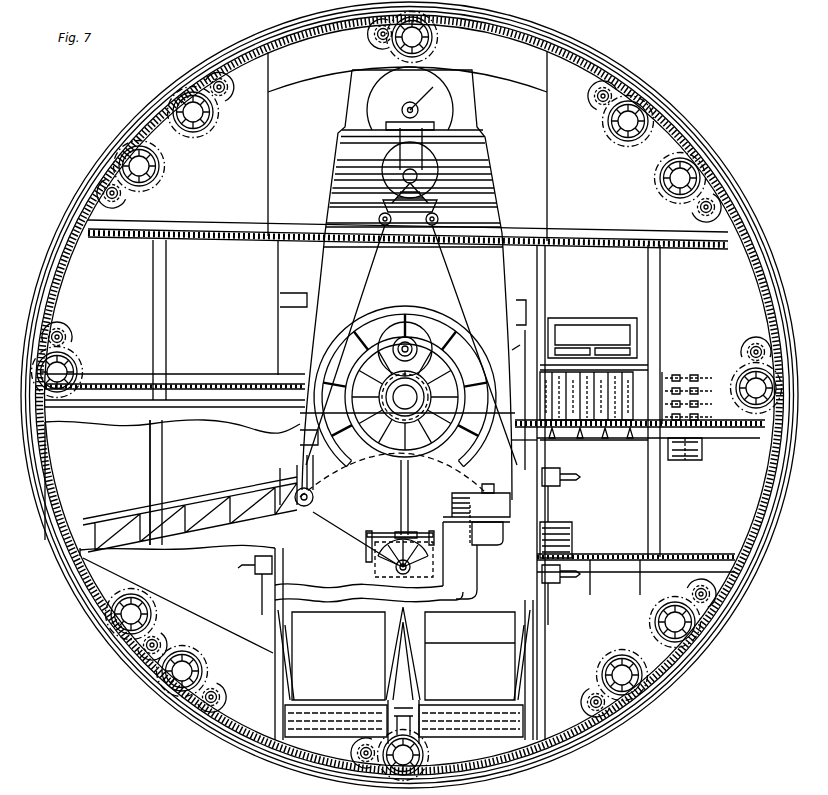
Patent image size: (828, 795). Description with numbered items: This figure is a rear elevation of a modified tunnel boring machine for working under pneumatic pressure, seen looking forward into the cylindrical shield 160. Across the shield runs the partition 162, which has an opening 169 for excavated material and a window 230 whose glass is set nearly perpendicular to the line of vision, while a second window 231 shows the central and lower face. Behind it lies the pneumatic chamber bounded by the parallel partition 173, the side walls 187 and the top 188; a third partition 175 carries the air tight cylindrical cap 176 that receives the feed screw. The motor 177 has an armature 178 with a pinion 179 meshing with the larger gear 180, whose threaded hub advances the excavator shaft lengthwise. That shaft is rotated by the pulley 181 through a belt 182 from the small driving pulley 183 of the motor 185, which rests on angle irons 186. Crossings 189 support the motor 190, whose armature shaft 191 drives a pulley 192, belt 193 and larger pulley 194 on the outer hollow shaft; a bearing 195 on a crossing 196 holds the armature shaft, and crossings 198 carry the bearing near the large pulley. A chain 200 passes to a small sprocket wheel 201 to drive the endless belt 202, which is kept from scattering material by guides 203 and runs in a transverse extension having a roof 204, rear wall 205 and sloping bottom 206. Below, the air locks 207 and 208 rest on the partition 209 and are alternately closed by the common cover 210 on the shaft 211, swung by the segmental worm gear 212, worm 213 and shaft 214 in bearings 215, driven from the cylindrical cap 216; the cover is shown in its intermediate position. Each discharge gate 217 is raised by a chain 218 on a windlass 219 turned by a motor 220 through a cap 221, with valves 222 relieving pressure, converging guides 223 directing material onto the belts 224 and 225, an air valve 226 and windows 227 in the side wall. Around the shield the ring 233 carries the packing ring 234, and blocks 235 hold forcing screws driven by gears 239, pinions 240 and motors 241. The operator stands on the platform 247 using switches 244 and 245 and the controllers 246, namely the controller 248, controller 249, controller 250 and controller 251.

The shield 160 is at (670, 108).
The partition 162 is at (405, 403).
The opening 169 is at (77, 481).
The partition 173 is at (411, 158).
The partition 175 is at (524, 446).
The cylindrical cap 176 is at (405, 397).
The motor 177 is at (405, 349).
The armature 178 is at (405, 397).
The pinion 179 is at (418, 340).
The gear 180 is at (405, 397).
The pulley 181 is at (405, 386).
The belt 182 is at (354, 278).
The driving pulley 183 is at (410, 170).
The motor 185 is at (428, 190).
The angle irons 186 is at (429, 212).
The side walls 187 is at (284, 270).
The top 188 is at (474, 78).
The crossings 189 is at (430, 176).
The motor 190 is at (410, 98).
The armature shaft 191 is at (428, 94).
The pulley 192 is at (418, 110).
The belt 193 is at (356, 300).
The pulley 194 is at (512, 352).
The bearing 195 is at (398, 120).
The crossing 196 is at (412, 137).
The crossings 198 is at (305, 437).
The chain 200 is at (323, 472).
The sprocket wheel 201 is at (309, 491).
The endless belt 202 is at (125, 522).
The guides 203 is at (190, 508).
The roof 204 is at (230, 424).
The rear wall 205 is at (230, 552).
The sloping bottom 206 is at (178, 605).
The air lock 207 is at (312, 655).
The air lock 208 is at (493, 655).
The partition 209 is at (369, 593).
The cover 210 is at (401, 478).
The shaft 211 is at (396, 568).
The segmental worm gear 212 is at (432, 562).
The worm 213 is at (412, 534).
The shaft 214 is at (400, 526).
The bearings 215 is at (366, 531).
The cylindrical cap 216 is at (568, 540).
The discharge gates 217 is at (403, 611).
The chain 218 is at (328, 590).
The windlass 219 is at (457, 510).
The motor 220 is at (489, 483).
The cap 221 is at (550, 510).
The valves 222 is at (409, 590).
The converging guides 223 is at (537, 650).
The belt 224 is at (336, 712).
The belt 225 is at (471, 710).
The air valve 226 is at (558, 480).
The windows 227 is at (530, 400).
The window 230 is at (592, 338).
The window 231 is at (638, 380).
The ring 233 is at (136, 124).
The packing ring 234 is at (66, 272).
The blocks 235 is at (406, 396).
The gear 239 is at (436, 46).
The pinion 240 is at (404, 394).
The motor 241 is at (272, 44).
The switch 244 is at (687, 387).
The switch 245 is at (675, 460).
The controllers 246 is at (618, 450).
The platform 247 is at (640, 558).
The controller 248 is at (586, 411).
The controller 249 is at (583, 439).
The controller 250 is at (611, 439).
The controller 251 is at (636, 439).